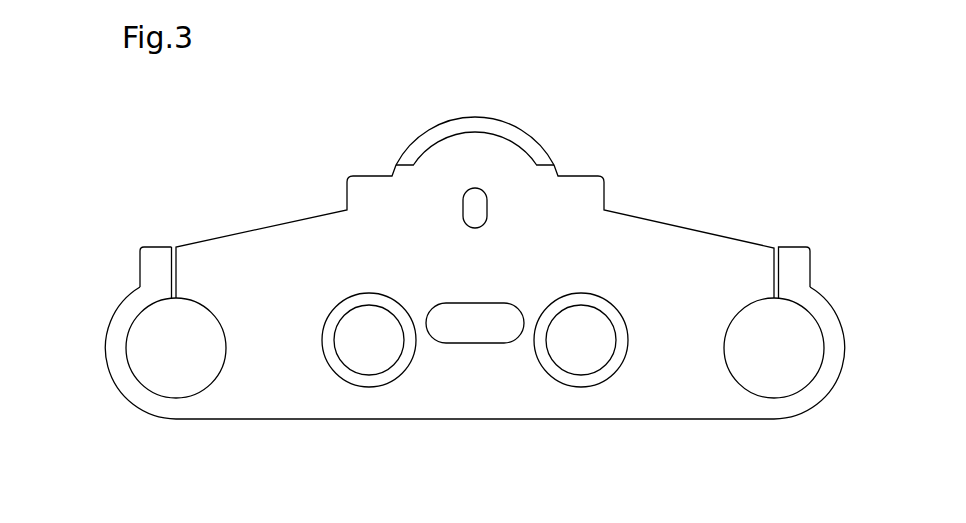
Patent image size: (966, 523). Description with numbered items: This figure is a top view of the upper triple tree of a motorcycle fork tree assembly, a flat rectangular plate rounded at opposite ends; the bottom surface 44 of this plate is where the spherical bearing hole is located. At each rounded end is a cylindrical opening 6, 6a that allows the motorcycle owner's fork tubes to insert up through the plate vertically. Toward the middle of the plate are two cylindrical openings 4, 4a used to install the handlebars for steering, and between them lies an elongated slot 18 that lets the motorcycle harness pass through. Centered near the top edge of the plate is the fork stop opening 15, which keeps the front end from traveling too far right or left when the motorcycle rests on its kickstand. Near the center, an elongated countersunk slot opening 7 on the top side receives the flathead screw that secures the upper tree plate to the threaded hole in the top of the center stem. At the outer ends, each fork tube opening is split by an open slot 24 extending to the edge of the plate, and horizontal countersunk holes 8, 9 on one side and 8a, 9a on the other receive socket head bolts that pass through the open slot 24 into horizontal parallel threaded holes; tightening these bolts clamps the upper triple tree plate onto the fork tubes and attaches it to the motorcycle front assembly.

The bottom surface 44 is at (350, 270).
The fork stop opening 15 is at (473, 133).
The elongated countersunk slot opening 7 is at (488, 208).
The open slot 24 is at (176, 298).
The horizontal countersunk hole 8 is at (140, 262).
The horizontal countersunk hole 9 is at (140, 273).
The horizontal countersunk hole 8a is at (810, 258).
The horizontal countersunk hole 9a is at (810, 272).
The cylindrical opening 6 is at (176, 348).
The cylindrical opening 6a is at (774, 348).
The cylindrical opening 4 is at (581, 340).
The cylindrical opening 4a is at (369, 340).
The elongated slot 18 is at (475, 343).